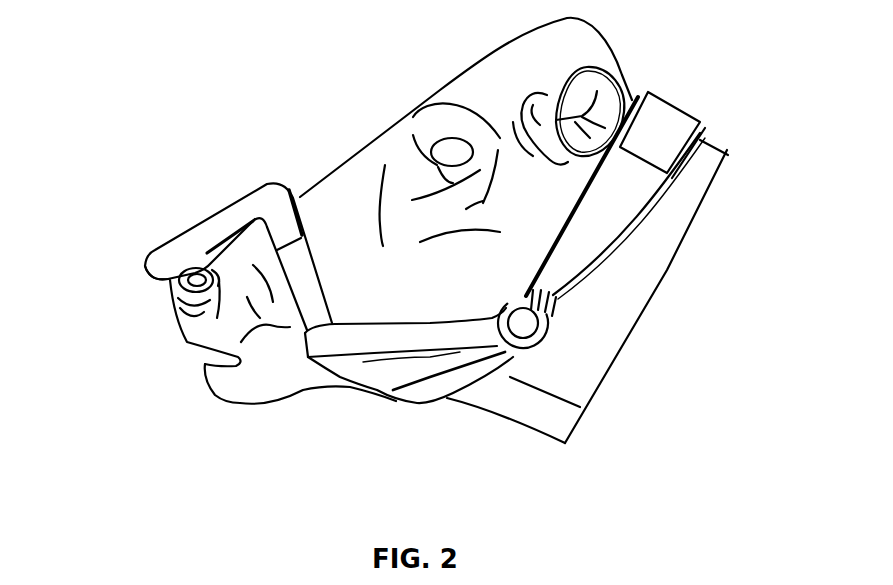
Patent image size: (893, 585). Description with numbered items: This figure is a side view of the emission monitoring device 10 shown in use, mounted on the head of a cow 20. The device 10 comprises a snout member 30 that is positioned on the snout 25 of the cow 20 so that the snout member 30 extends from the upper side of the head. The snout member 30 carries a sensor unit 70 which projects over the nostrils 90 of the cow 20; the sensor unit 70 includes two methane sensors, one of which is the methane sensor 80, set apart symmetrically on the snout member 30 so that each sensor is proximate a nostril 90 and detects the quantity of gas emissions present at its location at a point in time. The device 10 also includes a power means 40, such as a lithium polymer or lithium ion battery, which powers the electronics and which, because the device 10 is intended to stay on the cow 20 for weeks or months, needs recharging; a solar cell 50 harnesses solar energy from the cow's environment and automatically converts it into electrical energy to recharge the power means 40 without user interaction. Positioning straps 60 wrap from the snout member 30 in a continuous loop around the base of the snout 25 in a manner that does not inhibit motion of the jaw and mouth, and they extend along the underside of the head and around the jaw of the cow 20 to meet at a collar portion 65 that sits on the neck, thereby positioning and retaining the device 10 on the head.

The emission monitoring device 10 is at (419, 290).
The cow 20 is at (500, 78).
The snout 25 is at (247, 297).
The snout member 30 is at (190, 230).
The power means 40 is at (615, 227).
The solar cell 50 is at (663, 120).
The positioning straps 60 is at (453, 333).
The collar portion 65 is at (550, 303).
The sensor unit 70 is at (128, 240).
The methane sensor 80 is at (160, 270).
The nostrils 90 is at (188, 343).